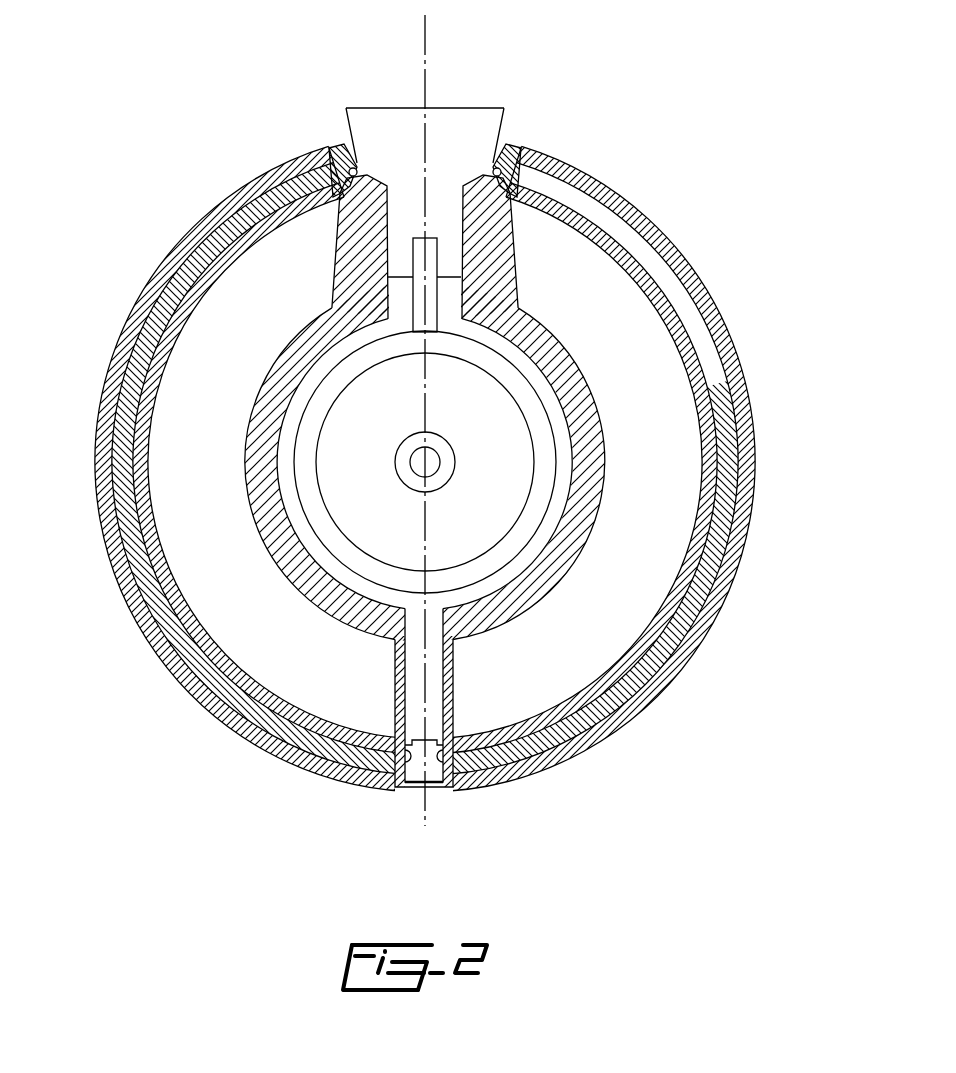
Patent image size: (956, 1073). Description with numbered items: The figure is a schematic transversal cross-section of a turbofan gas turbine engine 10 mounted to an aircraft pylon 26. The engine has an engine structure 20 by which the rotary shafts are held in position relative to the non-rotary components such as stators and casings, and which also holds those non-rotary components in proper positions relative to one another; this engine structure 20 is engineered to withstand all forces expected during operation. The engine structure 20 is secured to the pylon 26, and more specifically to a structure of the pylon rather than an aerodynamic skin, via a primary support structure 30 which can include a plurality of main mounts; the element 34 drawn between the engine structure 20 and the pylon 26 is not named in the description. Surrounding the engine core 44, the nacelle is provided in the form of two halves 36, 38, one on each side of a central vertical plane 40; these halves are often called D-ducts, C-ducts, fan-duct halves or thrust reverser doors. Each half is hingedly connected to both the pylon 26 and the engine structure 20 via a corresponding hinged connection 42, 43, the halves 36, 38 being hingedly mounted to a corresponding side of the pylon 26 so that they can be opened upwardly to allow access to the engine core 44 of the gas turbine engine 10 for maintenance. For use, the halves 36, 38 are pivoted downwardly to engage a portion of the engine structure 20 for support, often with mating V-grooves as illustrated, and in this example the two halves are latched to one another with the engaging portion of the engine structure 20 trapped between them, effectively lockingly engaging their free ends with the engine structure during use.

The turbofan gas turbine engine 10 is at (436, 417).
The engine structure 20 is at (556, 470).
The pylon 26 is at (452, 125).
The primary support structure 30 is at (438, 256).
The insulation layer 34 is at (722, 316).
The nacelle half 36 is at (168, 247).
The nacelle half 38 is at (752, 412).
The central vertical plane 40 is at (423, 42).
The hinged connection 42 is at (498, 166).
The hinged connection 43 is at (354, 166).
The engine core 44 is at (502, 372).